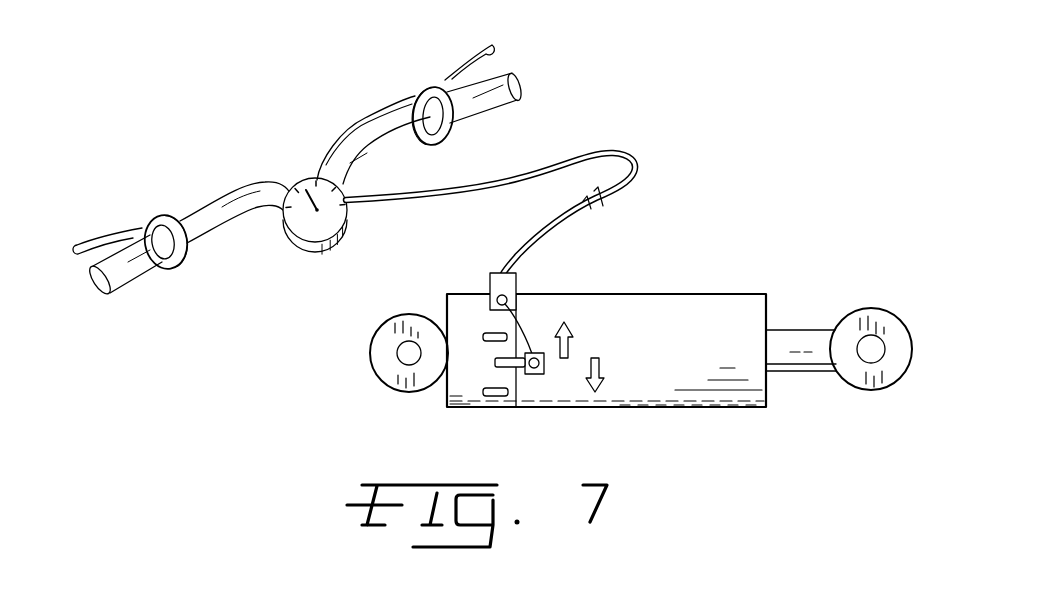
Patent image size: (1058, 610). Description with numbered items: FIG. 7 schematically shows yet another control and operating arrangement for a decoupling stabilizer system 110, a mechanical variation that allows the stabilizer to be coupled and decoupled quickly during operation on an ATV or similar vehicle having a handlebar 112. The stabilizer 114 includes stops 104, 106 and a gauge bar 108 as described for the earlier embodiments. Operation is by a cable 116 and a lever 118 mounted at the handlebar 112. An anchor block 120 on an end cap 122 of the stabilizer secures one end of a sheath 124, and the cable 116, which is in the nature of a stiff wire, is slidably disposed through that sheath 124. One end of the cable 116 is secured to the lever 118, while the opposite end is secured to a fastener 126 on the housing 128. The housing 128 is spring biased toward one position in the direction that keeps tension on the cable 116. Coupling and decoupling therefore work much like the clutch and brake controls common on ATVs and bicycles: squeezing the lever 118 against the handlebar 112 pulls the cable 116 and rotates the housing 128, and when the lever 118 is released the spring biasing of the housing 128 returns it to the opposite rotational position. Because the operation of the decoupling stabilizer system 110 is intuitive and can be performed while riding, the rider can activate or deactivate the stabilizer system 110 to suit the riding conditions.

The stop 104 is at (487, 332).
The stop 106 is at (496, 396).
The gauge bar 108 is at (497, 362).
The decoupling stabilizer system 110 is at (737, 152).
The handlebar 112 is at (233, 197).
The stabilizer 114 is at (728, 422).
The cable 116 is at (540, 310).
The lever 118 is at (455, 73).
The anchor block 120 is at (490, 282).
The end cap 122 is at (465, 409).
The sheath 124 is at (538, 172).
The fastener 126 is at (547, 370).
The housing 128 is at (737, 302).